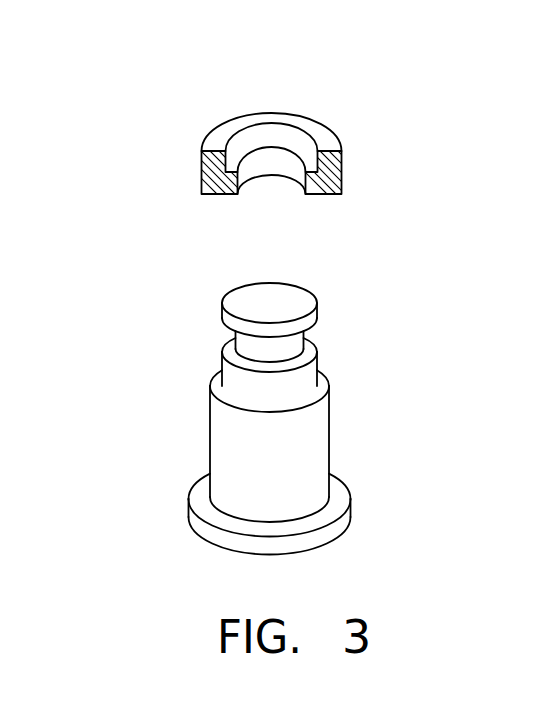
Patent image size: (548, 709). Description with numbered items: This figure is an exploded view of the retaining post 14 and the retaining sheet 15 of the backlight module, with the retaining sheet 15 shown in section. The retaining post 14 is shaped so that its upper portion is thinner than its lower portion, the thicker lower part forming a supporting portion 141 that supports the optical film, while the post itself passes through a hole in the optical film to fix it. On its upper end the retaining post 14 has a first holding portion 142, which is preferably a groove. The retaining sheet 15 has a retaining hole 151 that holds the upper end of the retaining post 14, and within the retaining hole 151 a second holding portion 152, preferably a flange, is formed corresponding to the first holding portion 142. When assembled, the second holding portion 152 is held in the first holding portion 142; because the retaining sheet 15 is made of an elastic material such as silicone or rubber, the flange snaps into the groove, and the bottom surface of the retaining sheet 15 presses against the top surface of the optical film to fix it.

The retaining post 14 is at (252, 410).
The supporting portion 141 is at (219, 391).
The first holding portion 142 is at (234, 348).
The retaining sheet 15 is at (262, 146).
The retaining hole 151 is at (262, 140).
The second holding portion 152 is at (322, 194).